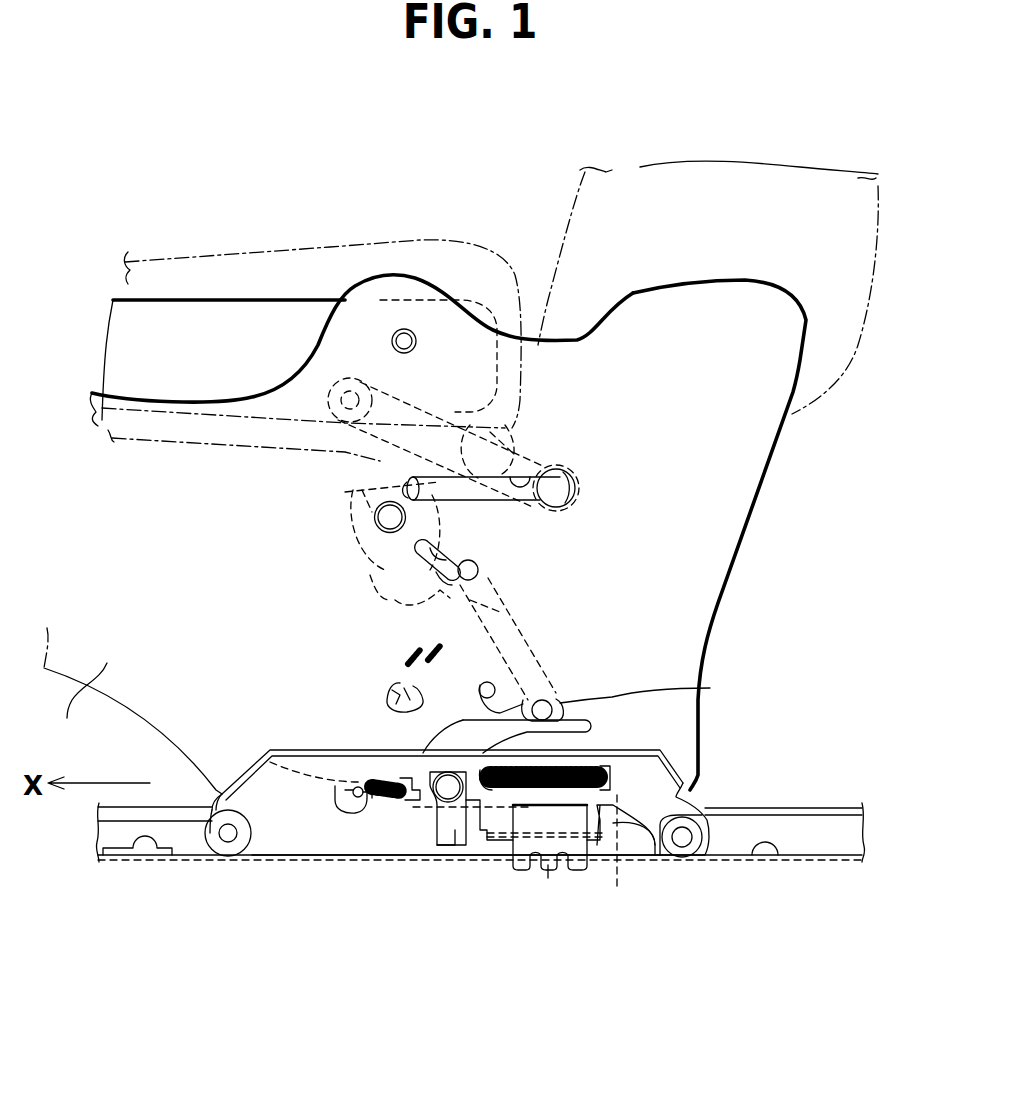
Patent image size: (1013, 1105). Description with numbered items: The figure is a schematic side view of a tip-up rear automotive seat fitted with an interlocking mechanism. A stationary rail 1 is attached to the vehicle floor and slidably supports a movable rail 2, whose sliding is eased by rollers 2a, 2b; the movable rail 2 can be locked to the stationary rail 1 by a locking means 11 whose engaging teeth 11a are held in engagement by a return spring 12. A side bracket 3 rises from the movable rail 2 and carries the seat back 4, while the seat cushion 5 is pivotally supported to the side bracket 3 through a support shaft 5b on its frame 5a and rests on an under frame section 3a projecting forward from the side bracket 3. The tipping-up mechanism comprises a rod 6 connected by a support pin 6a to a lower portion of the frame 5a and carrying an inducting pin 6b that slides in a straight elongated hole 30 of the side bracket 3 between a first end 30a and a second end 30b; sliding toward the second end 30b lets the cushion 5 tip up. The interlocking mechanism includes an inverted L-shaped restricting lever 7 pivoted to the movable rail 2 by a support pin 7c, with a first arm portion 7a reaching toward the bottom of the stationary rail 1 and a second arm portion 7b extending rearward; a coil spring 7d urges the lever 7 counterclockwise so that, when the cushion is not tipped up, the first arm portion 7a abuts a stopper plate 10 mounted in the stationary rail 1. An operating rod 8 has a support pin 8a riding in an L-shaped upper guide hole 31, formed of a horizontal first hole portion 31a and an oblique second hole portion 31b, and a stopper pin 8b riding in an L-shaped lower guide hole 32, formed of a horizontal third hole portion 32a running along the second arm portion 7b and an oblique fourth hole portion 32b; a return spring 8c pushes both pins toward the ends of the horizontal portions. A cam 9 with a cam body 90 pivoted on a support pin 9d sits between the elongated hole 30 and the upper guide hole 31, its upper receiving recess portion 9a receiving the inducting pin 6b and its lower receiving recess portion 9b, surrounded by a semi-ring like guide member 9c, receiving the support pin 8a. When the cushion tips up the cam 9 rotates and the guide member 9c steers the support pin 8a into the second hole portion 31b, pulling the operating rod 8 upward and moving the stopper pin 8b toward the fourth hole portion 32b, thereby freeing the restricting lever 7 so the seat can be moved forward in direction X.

The stationary rail 1 is at (766, 856).
The movable rail 2 is at (704, 799).
The roller 2a is at (230, 843).
The roller 2b is at (680, 848).
The side bracket 3 is at (739, 611).
The under frame section 3a is at (133, 719).
The seat back 4 is at (674, 145).
The seat cushion 5 is at (229, 238).
The frame 5a is at (272, 300).
The support shaft 5b is at (405, 331).
The rod 6 is at (432, 404).
The support pin 6a is at (340, 393).
The inducting pin 6b is at (575, 486).
The restricting lever 7 is at (430, 814).
The first arm portion 7a is at (448, 845).
The second arm portion 7b is at (590, 727).
The support pin 7c is at (406, 829).
The coil spring 7d is at (378, 780).
The operating rod 8 is at (536, 640).
The support pin 8a is at (480, 568).
The stopper pin 8b is at (708, 688).
The return spring 8c is at (495, 612).
The cam 9 is at (366, 456).
The upper receiving recess portion 9a is at (505, 450).
The lower receiving recess portion 9b is at (355, 562).
The semi-ring like guide member 9c is at (395, 600).
The support pin 9d is at (372, 520).
The stopper plate 10 is at (134, 850).
The locking means 11 is at (524, 886).
The engaging teeth 11a is at (527, 873).
The return spring 12 is at (629, 856).
The elongated hole 30 is at (532, 472).
The first end 30a is at (578, 478).
The second end 30b is at (380, 497).
The upper guide hole 31 is at (418, 576).
The first hole portion 31a is at (445, 578).
The second hole portion 31b is at (440, 553).
The lower guide hole 32 is at (460, 706).
The third hole portion 32a is at (548, 700).
The fourth hole portion 32b is at (484, 682).
The cam body 90 is at (360, 497).